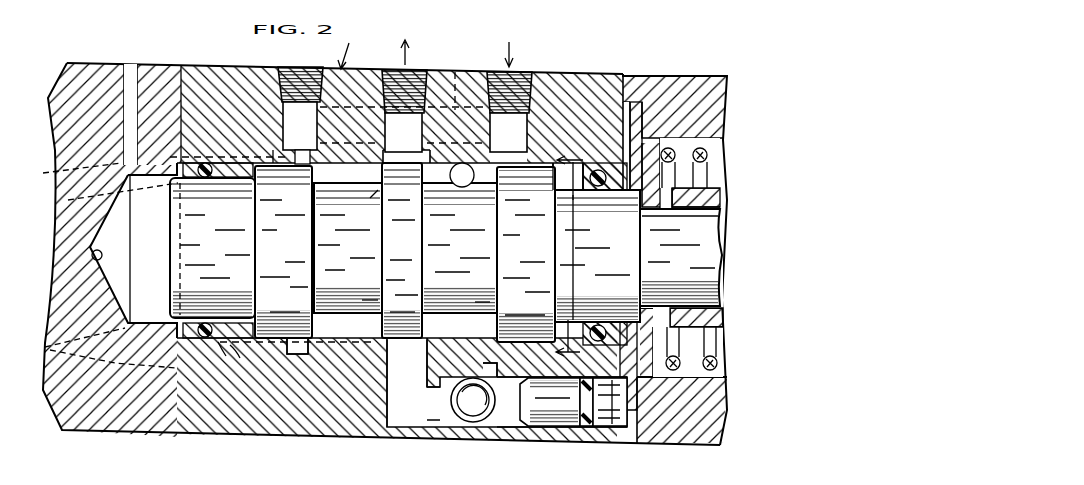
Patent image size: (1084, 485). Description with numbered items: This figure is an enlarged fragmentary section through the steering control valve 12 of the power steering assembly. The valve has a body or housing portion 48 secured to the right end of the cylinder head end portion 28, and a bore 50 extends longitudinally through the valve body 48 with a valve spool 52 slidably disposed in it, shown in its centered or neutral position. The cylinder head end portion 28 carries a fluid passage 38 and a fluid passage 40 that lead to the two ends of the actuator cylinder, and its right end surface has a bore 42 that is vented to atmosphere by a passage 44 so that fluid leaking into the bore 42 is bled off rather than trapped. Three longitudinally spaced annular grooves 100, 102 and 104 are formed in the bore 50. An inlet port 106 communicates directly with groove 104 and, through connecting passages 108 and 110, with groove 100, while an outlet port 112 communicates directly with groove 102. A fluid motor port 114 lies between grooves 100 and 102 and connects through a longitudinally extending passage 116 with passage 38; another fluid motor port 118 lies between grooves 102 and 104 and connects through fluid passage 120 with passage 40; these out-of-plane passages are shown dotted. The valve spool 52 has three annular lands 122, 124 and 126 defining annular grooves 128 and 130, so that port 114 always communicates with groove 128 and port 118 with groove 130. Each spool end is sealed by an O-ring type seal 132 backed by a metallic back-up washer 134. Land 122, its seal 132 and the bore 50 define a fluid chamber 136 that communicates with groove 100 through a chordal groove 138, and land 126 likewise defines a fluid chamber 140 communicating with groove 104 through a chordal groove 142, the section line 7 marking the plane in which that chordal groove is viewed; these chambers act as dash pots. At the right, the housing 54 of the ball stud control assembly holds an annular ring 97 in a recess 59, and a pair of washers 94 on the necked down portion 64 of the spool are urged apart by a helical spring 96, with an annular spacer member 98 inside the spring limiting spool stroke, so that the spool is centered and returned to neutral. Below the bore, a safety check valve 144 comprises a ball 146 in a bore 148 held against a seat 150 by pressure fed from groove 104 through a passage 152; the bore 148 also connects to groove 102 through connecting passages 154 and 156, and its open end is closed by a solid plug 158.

The section line 7- 7 is at (569, 257).
The steering control valve 12 is at (349, 48).
The cylinder head end portion 28 is at (67, 74).
The fluid passage 38 is at (45, 345).
The fluid passage 40 is at (43, 173).
The bore 42 is at (88, 258).
The passage 44 is at (138, 75).
The valve body 48 is at (240, 78).
The bore 50 is at (253, 188).
The valve spool 52 is at (352, 253).
The housing 54 is at (690, 432).
The recess 59 is at (630, 405).
The necked down portion 64 is at (697, 266).
The washers 94 is at (645, 207).
The helical spring 96 is at (707, 153).
The annular ring 97 is at (636, 230).
The annular spacer member 98 is at (712, 192).
The annular groove 100 is at (284, 332).
The annular groove 102 is at (402, 336).
The annular groove 104 is at (522, 340).
The inlet port 106 is at (529, 72).
The connecting passage 108 is at (328, 101).
The connecting passage 110 is at (287, 125).
The outlet port 112 is at (384, 72).
The fluid motor port 114 is at (335, 352).
The longitudinally extending passage 116 is at (232, 350).
The fluid motor port 118 is at (463, 185).
The fluid passage 120 is at (372, 200).
The annular land 122 is at (288, 251).
The annular land 124 is at (411, 254).
The annular land 126 is at (535, 256).
The annular groove 128 is at (362, 315).
The annular groove 130 is at (462, 322).
The O-ring type seal 132 is at (208, 180).
The metallic back-up washer 134 is at (192, 318).
The fluid chamber 136 is at (215, 343).
The chordal groove 138 is at (273, 163).
The fluid chamber 140 is at (587, 172).
The chordal groove 142 is at (540, 165).
The safety check valve 144 is at (515, 448).
The ball 146 is at (515, 425).
The bore 148 is at (530, 427).
The seat 150 is at (468, 422).
The passage 152 is at (486, 370).
The connecting passage 154 is at (435, 420).
The connecting passage 156 is at (390, 415).
The solid plug 158 is at (575, 427).